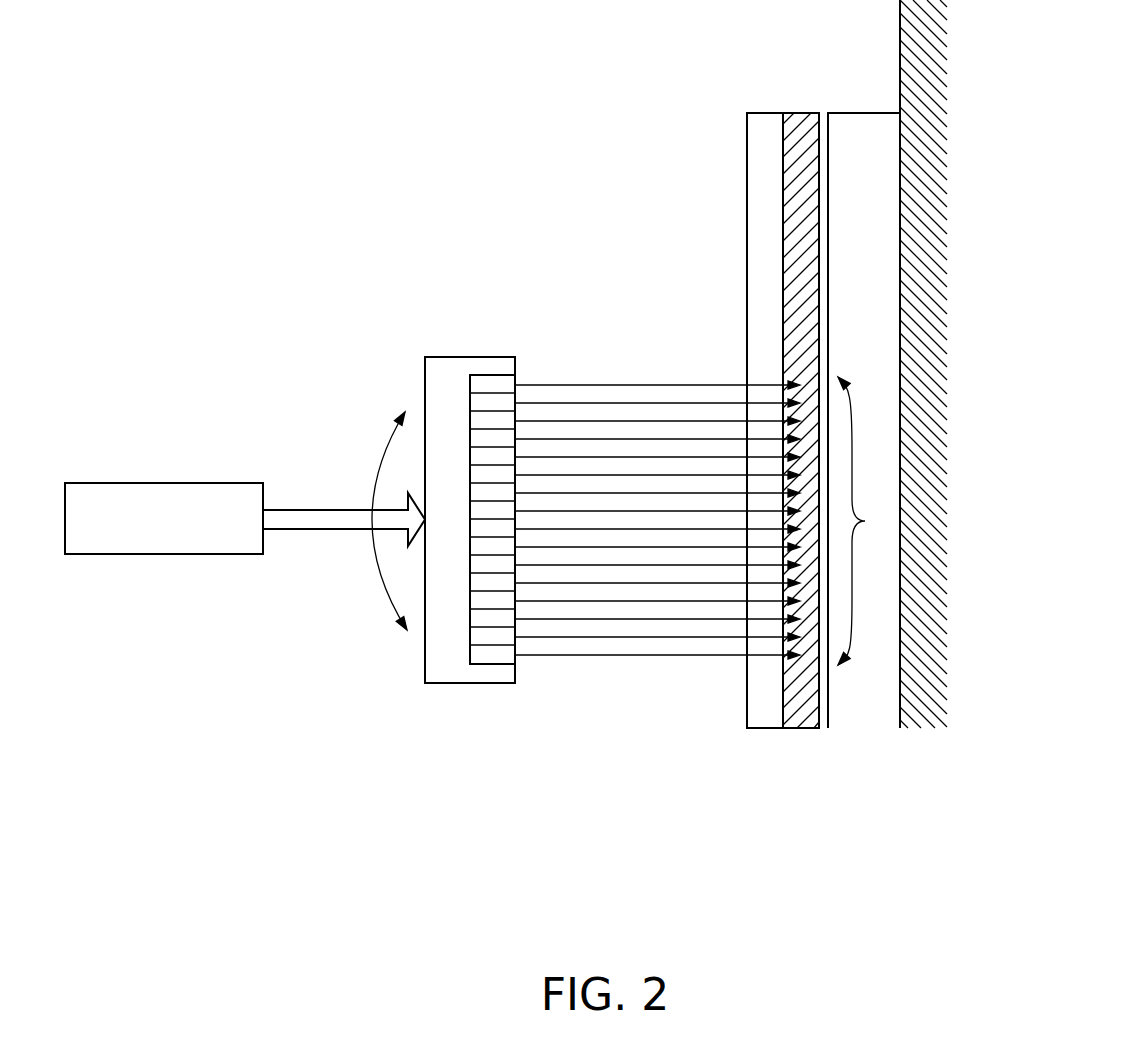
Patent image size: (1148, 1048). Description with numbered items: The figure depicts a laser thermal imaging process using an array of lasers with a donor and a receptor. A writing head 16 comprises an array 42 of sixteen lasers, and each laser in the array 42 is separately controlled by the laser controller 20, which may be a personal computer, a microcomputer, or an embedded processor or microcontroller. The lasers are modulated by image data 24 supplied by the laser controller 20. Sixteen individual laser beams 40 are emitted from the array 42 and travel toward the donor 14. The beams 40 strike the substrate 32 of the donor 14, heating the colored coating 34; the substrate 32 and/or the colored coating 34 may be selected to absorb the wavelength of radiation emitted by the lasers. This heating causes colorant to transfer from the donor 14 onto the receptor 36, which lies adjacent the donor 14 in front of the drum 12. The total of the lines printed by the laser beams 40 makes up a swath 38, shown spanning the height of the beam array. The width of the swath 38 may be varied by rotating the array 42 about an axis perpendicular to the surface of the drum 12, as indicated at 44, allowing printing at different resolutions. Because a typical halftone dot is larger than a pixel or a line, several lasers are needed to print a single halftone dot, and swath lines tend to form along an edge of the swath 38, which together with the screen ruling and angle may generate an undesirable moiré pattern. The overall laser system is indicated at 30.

The drum 12 is at (923, 364).
The donor 14 is at (783, 370).
The writing head 16 is at (437, 530).
The laser controller 20 is at (164, 518).
The image data 24 is at (301, 530).
The laser system 30 is at (440, 469).
The substrate 32 is at (765, 113).
The colored coating 34 is at (800, 113).
The receptor 36 is at (868, 139).
The swath 38 is at (868, 521).
The laser beams 40 is at (641, 668).
The array 42 is at (490, 375).
The rotation of array 44 is at (375, 462).